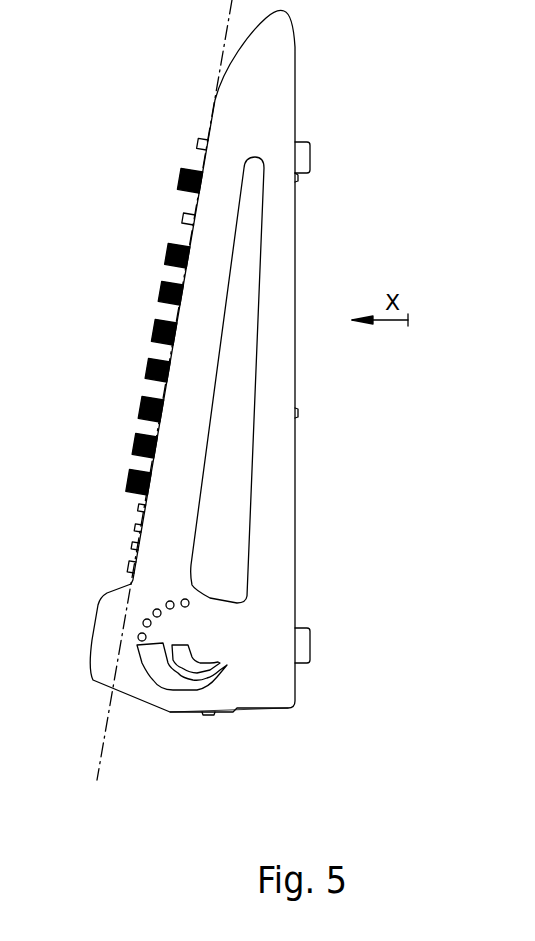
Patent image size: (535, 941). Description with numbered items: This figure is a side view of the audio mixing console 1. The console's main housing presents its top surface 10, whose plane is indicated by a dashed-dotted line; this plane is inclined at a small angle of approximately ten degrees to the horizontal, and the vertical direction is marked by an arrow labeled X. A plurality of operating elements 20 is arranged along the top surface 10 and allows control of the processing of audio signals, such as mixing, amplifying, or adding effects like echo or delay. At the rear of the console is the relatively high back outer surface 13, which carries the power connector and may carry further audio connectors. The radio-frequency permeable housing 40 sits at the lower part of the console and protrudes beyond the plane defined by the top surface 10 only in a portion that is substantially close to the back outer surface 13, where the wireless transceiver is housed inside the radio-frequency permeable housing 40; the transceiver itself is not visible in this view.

The audio mixing console 1 is at (354, 459).
The top surface 10 is at (200, 165).
The back outer surface 13 is at (258, 708).
The operating elements 20 is at (150, 335).
The radio-frequency permeable housing 40 is at (277, 630).